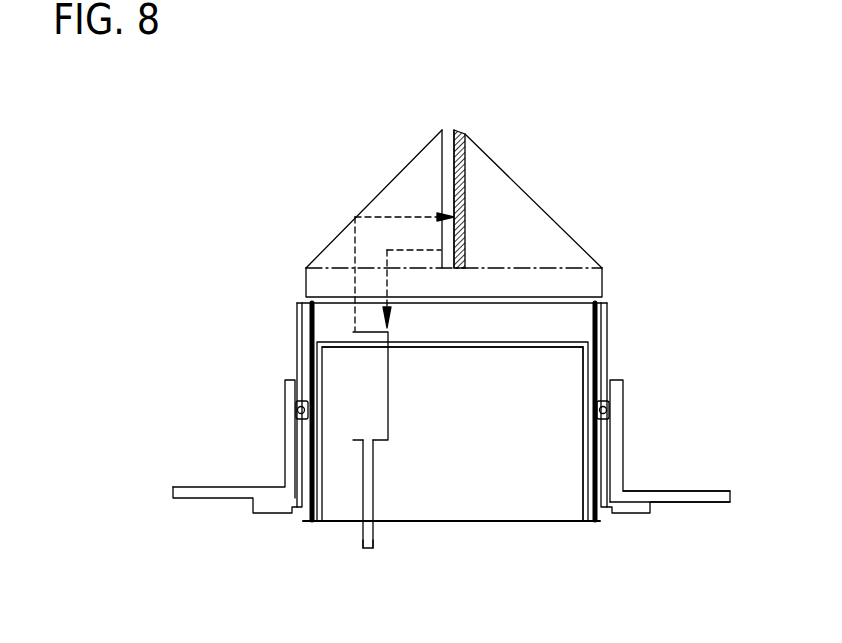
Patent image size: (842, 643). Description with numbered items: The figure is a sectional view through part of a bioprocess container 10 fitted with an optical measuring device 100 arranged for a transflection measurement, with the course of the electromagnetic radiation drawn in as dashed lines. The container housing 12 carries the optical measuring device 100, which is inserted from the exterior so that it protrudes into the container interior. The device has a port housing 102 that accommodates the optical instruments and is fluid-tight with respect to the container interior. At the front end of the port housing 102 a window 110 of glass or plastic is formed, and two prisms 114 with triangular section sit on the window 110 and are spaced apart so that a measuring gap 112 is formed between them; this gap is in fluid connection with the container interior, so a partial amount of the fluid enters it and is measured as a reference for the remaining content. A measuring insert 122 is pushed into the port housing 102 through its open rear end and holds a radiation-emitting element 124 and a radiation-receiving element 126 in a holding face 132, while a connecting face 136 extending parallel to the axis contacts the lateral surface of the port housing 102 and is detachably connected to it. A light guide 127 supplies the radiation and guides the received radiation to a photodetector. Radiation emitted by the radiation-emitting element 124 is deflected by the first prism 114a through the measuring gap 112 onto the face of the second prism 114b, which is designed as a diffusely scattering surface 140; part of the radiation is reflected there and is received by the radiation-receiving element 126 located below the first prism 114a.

The bioprocess container 10 is at (717, 497).
The container housing 12 is at (683, 497).
The optical measuring device 100 is at (600, 334).
The port housing 102 is at (308, 330).
The window 110 is at (590, 282).
The measuring gap 112 is at (450, 147).
The prisms 114 is at (460, 199).
The first prism 114a is at (374, 204).
The second prism 114b is at (543, 237).
The measuring insert 122 is at (452, 431).
The radiation-emitting element 124 is at (373, 415).
The radiation-receiving element 126 is at (372, 387).
The light guide 127 is at (368, 537).
The holding face 132 is at (535, 348).
The connecting face 136 is at (583, 453).
The diffusely scattering surface 140 is at (466, 137).